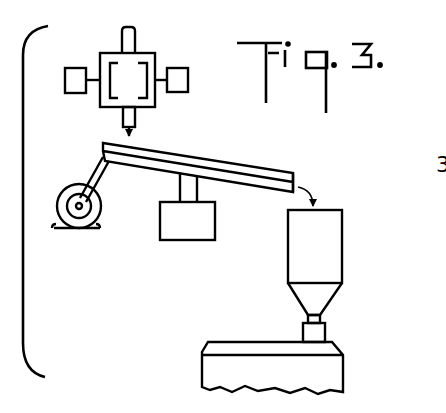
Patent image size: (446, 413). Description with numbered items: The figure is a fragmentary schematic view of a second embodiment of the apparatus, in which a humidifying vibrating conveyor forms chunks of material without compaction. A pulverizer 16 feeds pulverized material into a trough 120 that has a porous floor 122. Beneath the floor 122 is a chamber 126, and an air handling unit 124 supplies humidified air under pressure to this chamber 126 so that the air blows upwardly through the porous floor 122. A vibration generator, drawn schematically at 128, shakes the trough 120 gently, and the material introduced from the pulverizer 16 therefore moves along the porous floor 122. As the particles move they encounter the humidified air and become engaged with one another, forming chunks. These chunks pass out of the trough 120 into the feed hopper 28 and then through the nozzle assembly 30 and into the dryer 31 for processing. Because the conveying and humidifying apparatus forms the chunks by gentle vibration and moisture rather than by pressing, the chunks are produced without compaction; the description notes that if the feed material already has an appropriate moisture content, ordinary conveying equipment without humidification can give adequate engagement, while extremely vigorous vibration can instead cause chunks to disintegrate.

The pulverizer 16 is at (148, 53).
The trough 120 is at (189, 151).
The porous floor 122 is at (234, 167).
The air handling unit 124 is at (192, 240).
The chamber 126 is at (241, 183).
The wheel / roller 128 is at (77, 232).
The feed hopper 28 is at (342, 247).
The nozzle assembly 30 is at (325, 332).
The dryer 31 is at (200, 352).